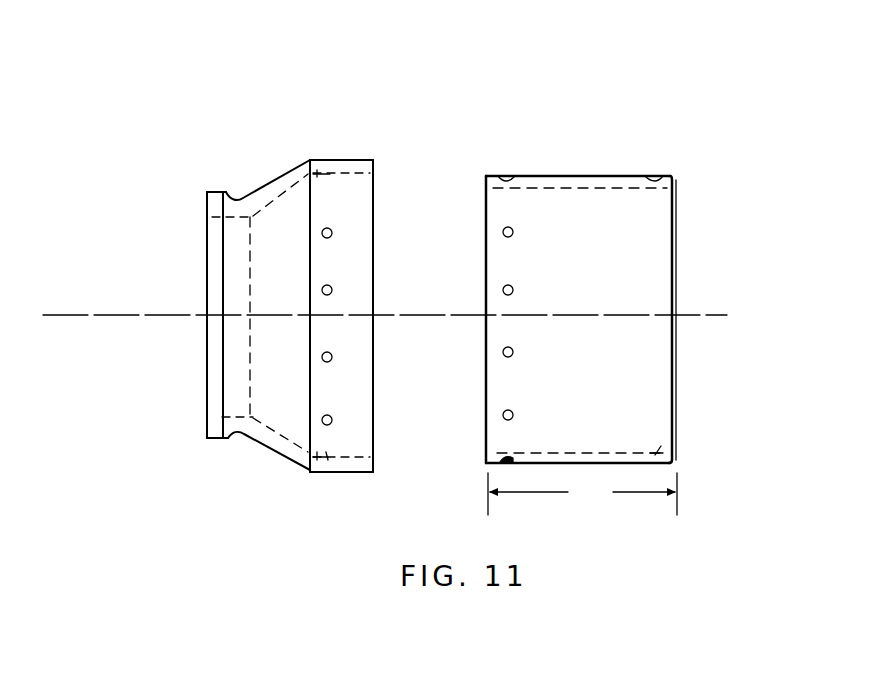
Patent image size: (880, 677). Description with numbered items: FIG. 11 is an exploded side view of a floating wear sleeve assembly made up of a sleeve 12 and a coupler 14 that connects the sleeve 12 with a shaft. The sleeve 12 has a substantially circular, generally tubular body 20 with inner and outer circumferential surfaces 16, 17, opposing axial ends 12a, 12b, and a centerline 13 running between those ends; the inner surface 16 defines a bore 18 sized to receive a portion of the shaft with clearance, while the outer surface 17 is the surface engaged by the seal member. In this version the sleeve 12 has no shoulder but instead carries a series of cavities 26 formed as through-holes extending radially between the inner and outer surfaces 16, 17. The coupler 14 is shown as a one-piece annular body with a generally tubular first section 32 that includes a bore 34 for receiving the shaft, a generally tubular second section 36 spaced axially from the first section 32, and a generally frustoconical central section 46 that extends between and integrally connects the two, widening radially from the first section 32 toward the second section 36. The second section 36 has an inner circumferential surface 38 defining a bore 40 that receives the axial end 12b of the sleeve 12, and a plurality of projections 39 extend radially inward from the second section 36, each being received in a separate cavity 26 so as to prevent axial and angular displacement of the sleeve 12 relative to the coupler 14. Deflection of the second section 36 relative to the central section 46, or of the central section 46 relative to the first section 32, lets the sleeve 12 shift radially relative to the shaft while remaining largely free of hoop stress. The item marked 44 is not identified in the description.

The sleeve 12 is at (604, 133).
The axial end 12a is at (681, 242).
The axial end 12b is at (487, 430).
The centerline 13 is at (716, 315).
The coupler 14 is at (232, 92).
The inner circumferential surface 16 is at (592, 189).
The outer circumferential surface 17 is at (612, 411).
The bore 18 is at (663, 433).
The tubular body 20 is at (646, 178).
The cavities 26 is at (515, 231).
The first section 32 is at (214, 194).
The bore 34 is at (228, 402).
The second section 36 is at (350, 168).
The inner circumferential surface 38 is at (384, 215).
The projections 39 is at (333, 288).
The bore 40 is at (343, 457).
The top edge 44 is at (484, 186).
The central section 46 is at (279, 180).